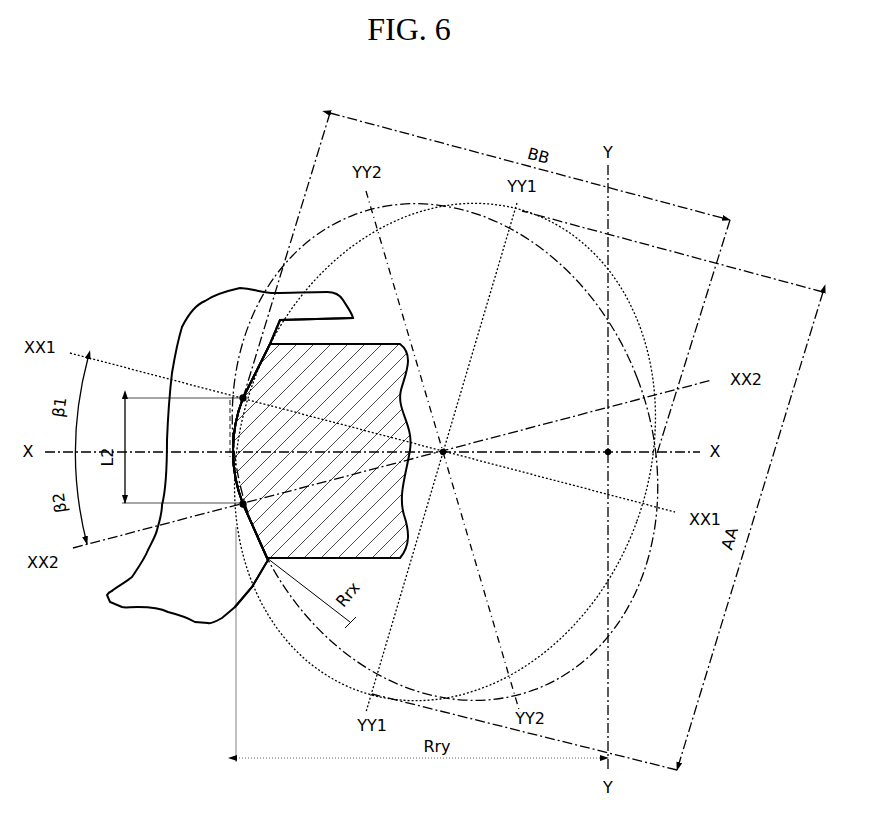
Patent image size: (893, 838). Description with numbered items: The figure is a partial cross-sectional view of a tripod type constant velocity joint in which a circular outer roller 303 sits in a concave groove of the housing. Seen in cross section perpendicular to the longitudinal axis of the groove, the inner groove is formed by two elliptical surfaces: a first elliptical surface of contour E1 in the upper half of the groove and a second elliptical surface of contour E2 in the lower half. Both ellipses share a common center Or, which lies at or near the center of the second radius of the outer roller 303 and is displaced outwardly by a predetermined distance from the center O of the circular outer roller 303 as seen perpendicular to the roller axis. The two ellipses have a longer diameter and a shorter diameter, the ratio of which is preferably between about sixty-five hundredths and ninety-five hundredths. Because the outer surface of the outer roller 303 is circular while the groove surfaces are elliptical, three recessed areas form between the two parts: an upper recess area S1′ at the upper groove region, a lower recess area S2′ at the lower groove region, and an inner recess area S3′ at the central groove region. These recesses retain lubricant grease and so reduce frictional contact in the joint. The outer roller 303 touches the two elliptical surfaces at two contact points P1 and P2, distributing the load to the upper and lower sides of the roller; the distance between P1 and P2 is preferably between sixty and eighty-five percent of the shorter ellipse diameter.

The outer roller 303 is at (345, 364).
The upper recess area S1′ is at (267, 344).
The lower recess area S2′ is at (268, 561).
The inner recess area S3′ is at (241, 449).
The first contact point P1 is at (240, 394).
The second contact point P2 is at (243, 503).
The first elliptical surface contour E1 is at (603, 262).
The second elliptical surface contour E2 is at (617, 327).
The center of the two ellipses Or is at (446, 450).
The center of the circular outer roller O is at (606, 451).